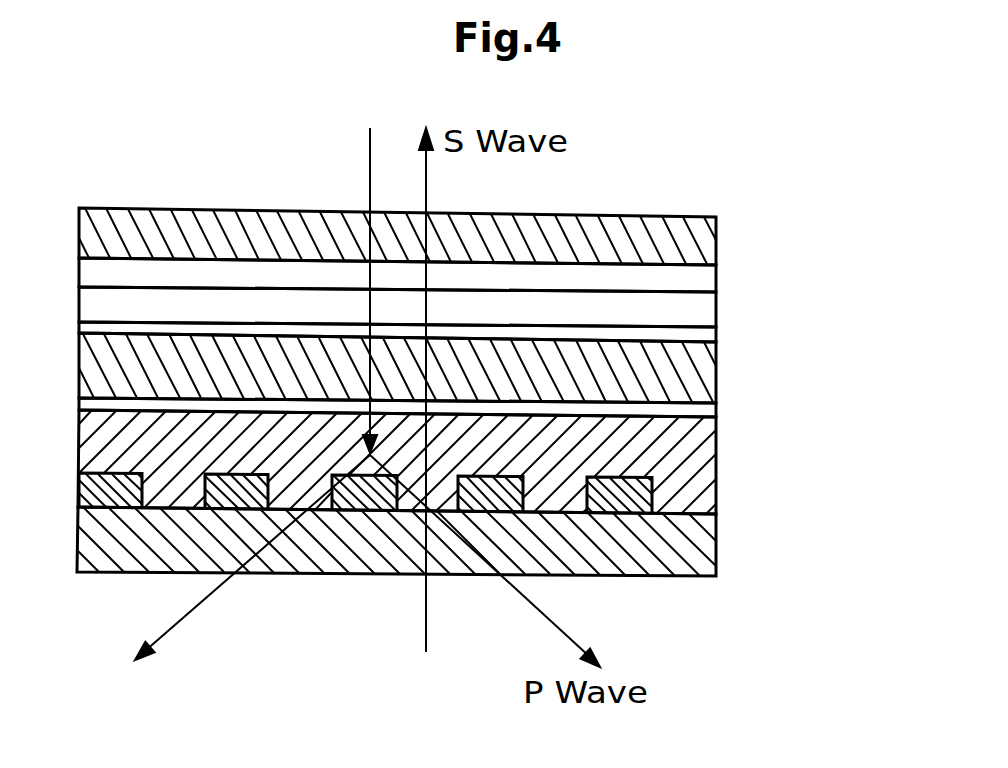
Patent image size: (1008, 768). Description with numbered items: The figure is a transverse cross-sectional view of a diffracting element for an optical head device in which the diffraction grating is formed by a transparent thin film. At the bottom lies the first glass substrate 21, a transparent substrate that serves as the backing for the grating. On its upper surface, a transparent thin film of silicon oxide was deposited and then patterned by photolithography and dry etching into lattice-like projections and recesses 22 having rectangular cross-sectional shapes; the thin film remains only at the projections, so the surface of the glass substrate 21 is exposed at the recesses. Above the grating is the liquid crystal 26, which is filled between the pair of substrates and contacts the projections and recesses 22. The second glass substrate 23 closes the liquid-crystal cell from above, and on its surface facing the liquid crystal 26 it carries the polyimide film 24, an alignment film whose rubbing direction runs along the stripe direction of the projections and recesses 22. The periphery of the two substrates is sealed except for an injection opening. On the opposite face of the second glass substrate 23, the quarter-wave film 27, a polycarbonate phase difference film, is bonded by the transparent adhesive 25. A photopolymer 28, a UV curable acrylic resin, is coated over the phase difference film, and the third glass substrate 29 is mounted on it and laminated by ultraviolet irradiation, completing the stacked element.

The glass substrate 21 is at (673, 582).
The projections and recesses 22 is at (487, 500).
The second glass substrate 23 is at (665, 370).
The polyimide film 24 is at (660, 412).
The transparent adhesive 25 is at (665, 335).
The liquid crystal 26 is at (658, 460).
The quarter-wave film 27 is at (665, 308).
The photopolymer 28 is at (667, 280).
The third glass substrate 29 is at (562, 235).